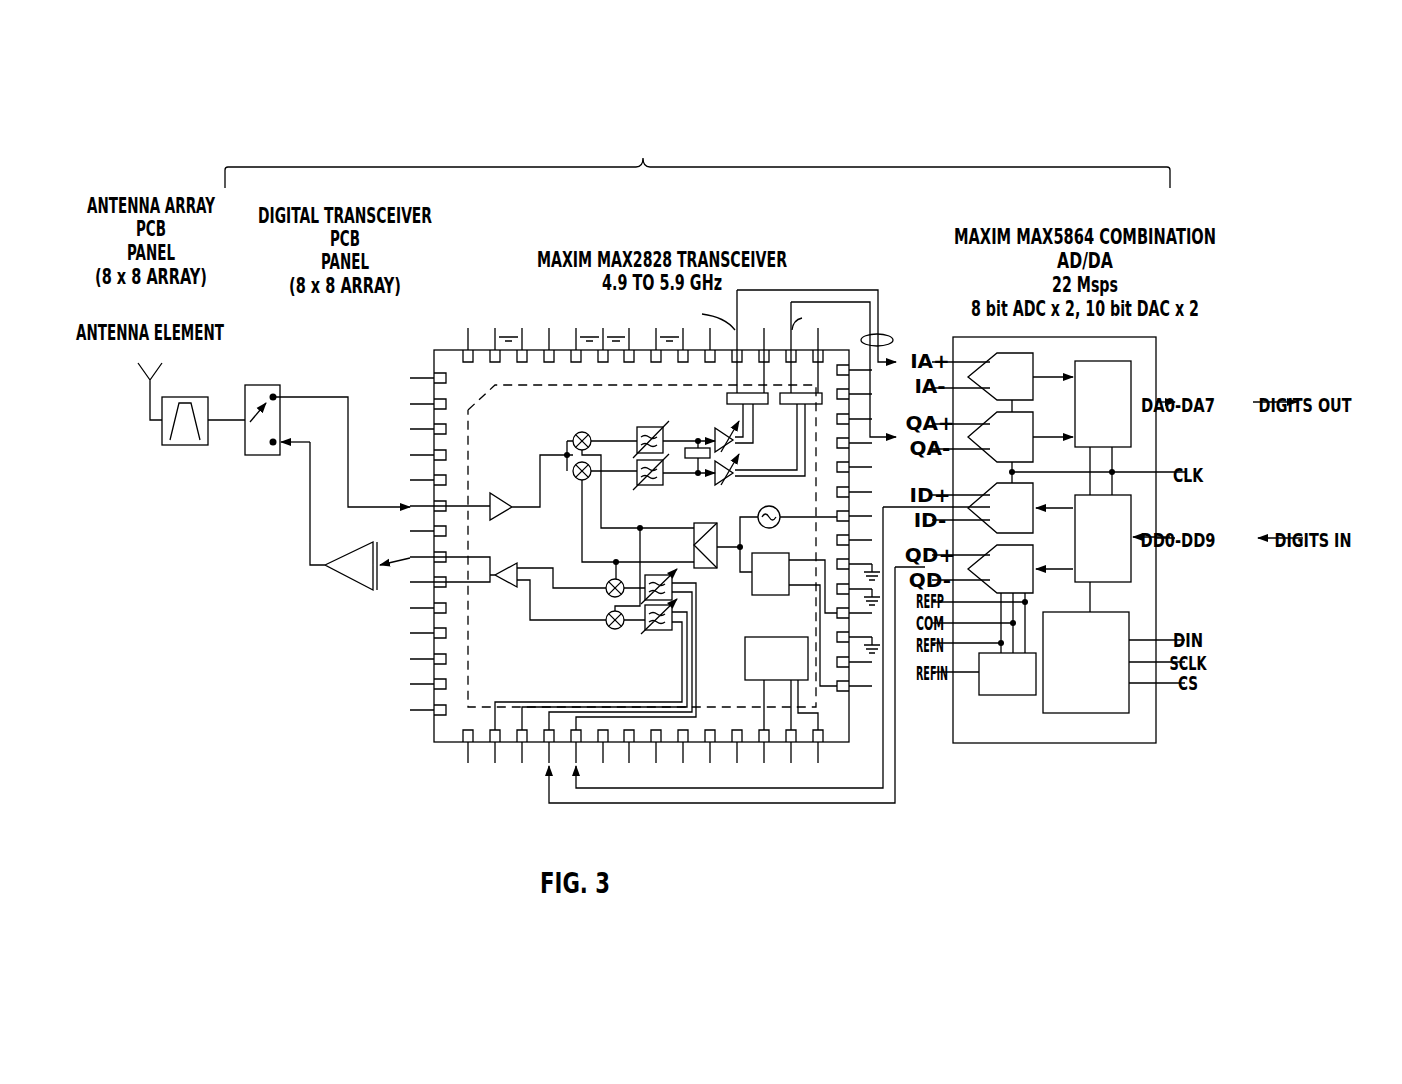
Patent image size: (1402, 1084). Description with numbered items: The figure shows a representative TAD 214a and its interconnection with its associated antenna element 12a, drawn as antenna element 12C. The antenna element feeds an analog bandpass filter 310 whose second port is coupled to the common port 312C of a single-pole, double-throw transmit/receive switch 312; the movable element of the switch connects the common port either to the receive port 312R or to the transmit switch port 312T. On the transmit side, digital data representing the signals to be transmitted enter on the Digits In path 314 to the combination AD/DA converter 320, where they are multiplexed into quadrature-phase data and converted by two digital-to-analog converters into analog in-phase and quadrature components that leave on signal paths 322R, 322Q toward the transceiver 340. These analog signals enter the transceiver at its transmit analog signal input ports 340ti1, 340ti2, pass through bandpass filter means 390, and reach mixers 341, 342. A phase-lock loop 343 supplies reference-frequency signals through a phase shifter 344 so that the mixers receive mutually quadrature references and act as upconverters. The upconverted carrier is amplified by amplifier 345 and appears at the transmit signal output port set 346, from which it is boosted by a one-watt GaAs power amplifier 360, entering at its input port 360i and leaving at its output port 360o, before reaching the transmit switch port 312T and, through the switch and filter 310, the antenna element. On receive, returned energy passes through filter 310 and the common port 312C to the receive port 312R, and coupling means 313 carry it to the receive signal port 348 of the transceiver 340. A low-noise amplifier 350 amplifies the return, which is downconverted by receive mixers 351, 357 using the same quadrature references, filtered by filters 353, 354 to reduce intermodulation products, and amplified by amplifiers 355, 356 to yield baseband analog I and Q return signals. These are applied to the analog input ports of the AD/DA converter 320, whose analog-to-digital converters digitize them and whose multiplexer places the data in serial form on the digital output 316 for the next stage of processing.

The TAD 214a is at (697, 159).
The antenna element 12a is at (136, 312).
The antenna element 12C is at (165, 371).
The analog bandpass filter 310 is at (192, 447).
The transmit/receive switch 312 is at (254, 470).
The common port 312C is at (241, 418).
The receive port 312R is at (283, 392).
The transmit switch port 312T is at (279, 457).
The coupling means 313 is at (345, 396).
The receive signal port 348 is at (409, 503).
The power amplifier 360 is at (303, 589).
The input port 360i is at (380, 563).
The HPA output 360o is at (323, 567).
The transmit signal output port set 346 is at (402, 580).
The transceiver 340 is at (450, 752).
The low-noise amplifier 350 is at (507, 493).
The receive I mixer 357 is at (582, 432).
The multiplier 351 is at (578, 480).
The filter 354 is at (650, 425).
The filter 353 is at (652, 485).
The amplifier 356 is at (720, 428).
The amplifier 355 is at (742, 462).
The phase-lock loop 343 is at (775, 502).
The phase shifter 344 is at (715, 523).
The amplifier 345 is at (509, 587).
The mixer 341 is at (606, 593).
The mixer 342 is at (606, 626).
The bandpass filter means 390 is at (663, 645).
The signal path 322R is at (882, 764).
The signal path 322Q is at (863, 806).
The transmit analog signal input port 340ti1 is at (542, 763).
The transmit analog signal input port 340ti2 is at (580, 770).
The combination analog-to-digital and digital-to-analog converter 320 is at (1130, 745).
The ADC digital output DA0-DA7 316 is at (1161, 400).
The Digits In path 314 is at (1167, 541).